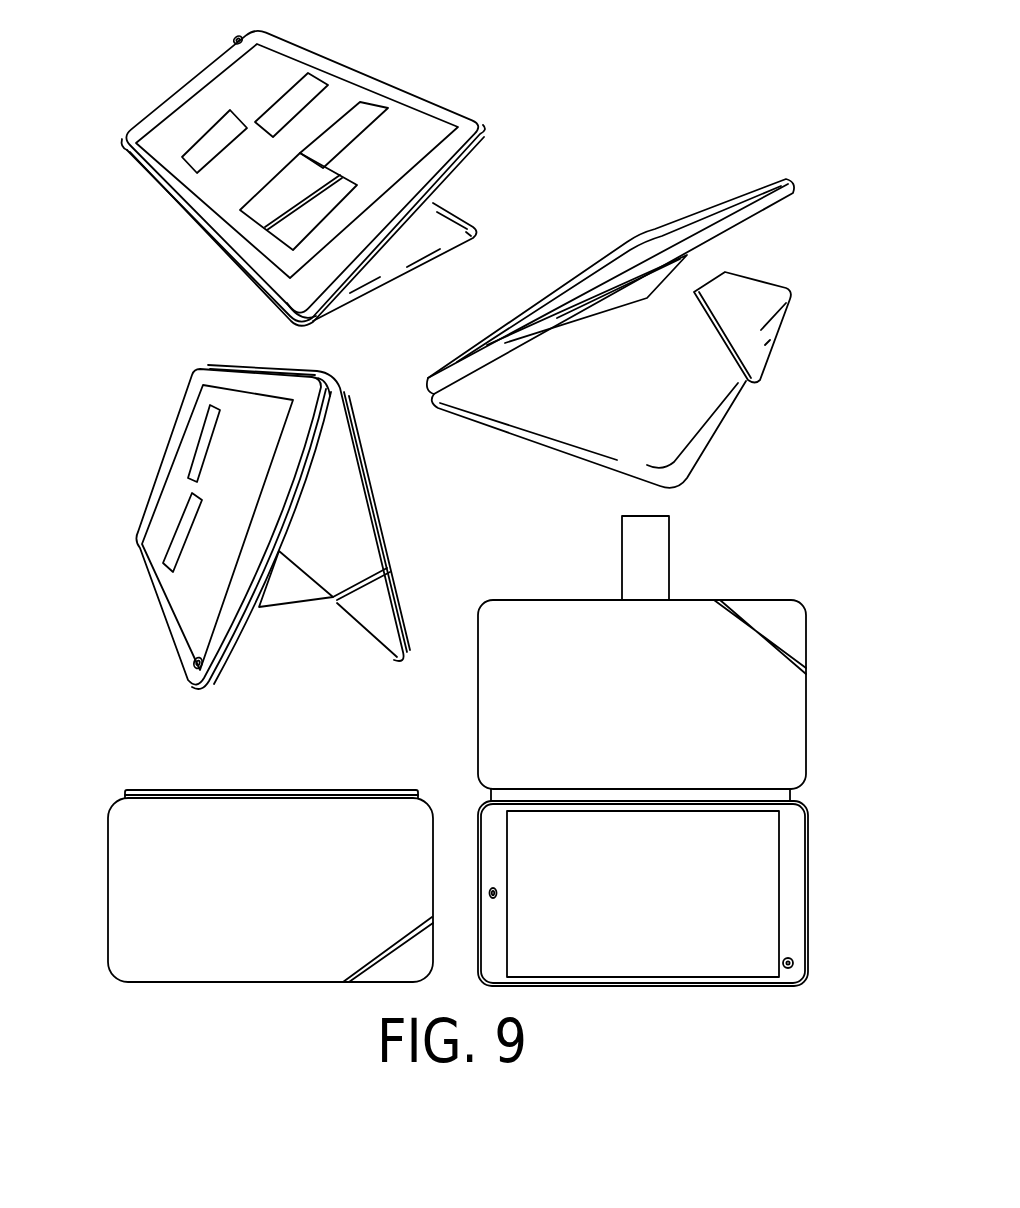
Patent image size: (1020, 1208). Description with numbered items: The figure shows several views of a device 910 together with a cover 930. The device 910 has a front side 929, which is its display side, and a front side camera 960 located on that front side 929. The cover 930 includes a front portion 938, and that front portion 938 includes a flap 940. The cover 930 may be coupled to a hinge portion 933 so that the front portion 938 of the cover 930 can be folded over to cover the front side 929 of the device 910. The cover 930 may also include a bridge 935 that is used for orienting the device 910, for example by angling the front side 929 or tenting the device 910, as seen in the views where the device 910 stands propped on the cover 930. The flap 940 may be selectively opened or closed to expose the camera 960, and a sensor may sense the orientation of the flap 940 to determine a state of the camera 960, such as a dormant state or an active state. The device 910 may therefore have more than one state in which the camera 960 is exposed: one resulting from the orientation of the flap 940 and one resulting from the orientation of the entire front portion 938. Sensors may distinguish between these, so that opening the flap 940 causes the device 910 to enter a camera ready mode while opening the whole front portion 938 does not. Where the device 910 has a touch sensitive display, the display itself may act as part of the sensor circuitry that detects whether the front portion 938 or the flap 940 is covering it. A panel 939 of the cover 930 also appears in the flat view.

The device 910 is at (316, 175).
The front side 929 is at (457, 510).
The cover 930 is at (334, 327).
The hinge portion 933 is at (203, 248).
The bridge 935 is at (525, 439).
The front portion 938 is at (473, 202).
The cover back panel 939 is at (642, 694).
The flap 940 is at (798, 273).
The front side camera 960 is at (234, 37).